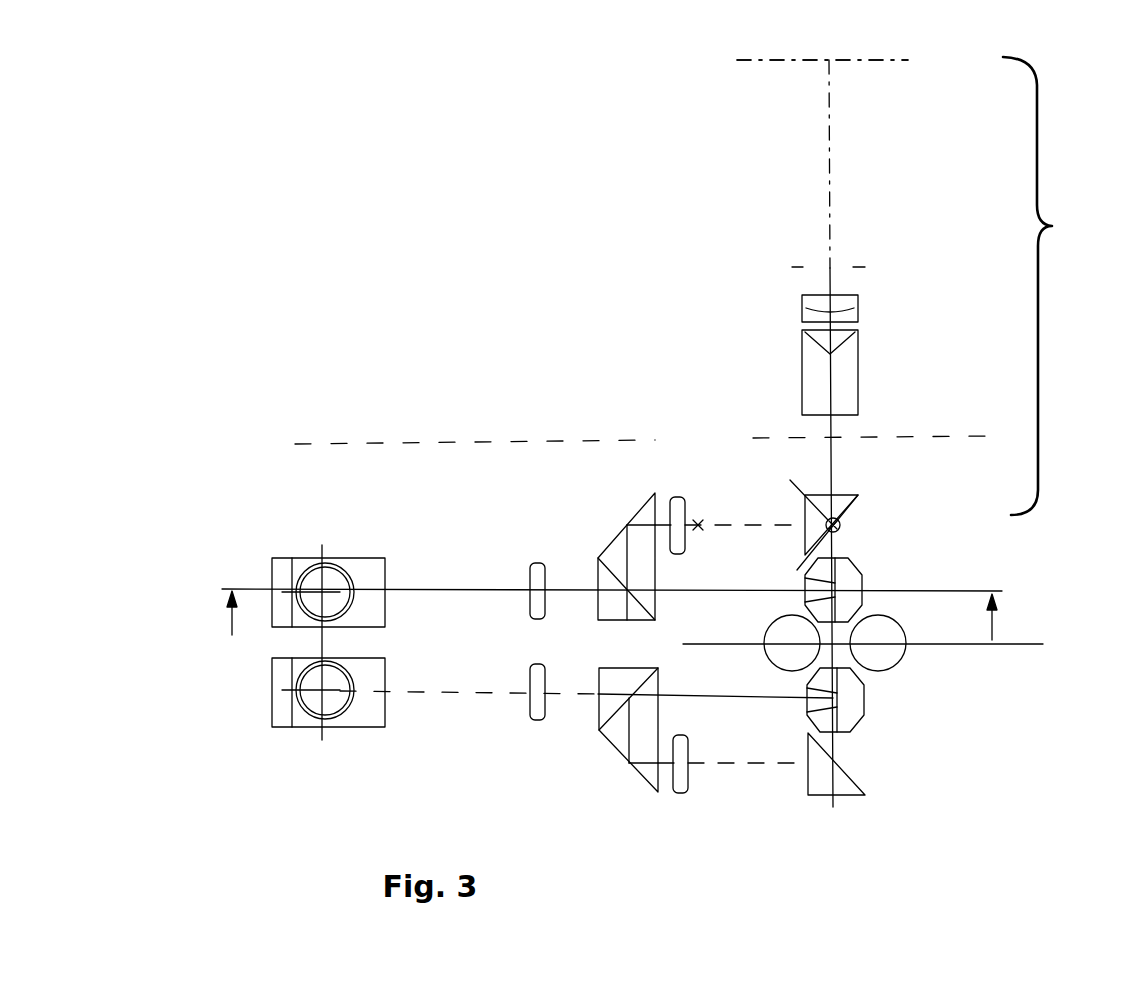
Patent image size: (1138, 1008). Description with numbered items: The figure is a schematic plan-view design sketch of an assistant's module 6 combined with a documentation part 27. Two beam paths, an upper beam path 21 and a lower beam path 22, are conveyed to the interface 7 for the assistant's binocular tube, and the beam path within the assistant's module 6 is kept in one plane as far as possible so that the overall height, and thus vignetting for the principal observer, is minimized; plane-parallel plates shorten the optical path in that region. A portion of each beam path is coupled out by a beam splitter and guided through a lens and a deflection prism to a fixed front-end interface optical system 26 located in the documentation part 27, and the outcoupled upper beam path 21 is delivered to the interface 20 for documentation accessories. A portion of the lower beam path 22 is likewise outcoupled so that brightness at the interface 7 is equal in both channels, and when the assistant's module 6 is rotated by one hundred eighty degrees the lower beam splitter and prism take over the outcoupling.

The assistant's module 6 is at (492, 462).
The interface for the assistant's tube 7 is at (316, 548).
The interface for documentation accessories 20 is at (885, 55).
The upper beam path 21 is at (473, 592).
The lower beam path 22 is at (487, 693).
The fixed front-end interface optical system 26 is at (890, 292).
The documentation part 27 is at (1063, 286).